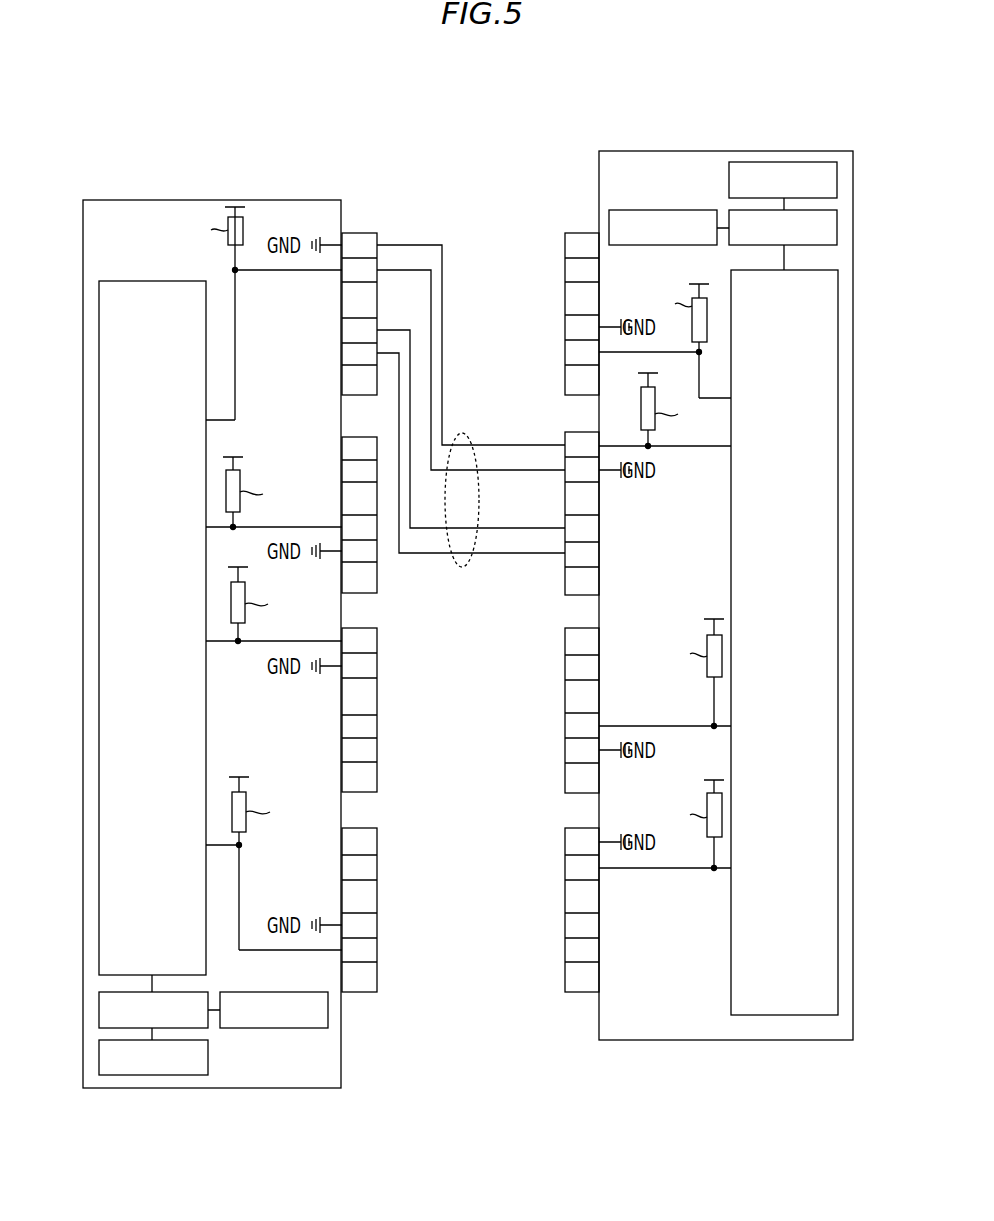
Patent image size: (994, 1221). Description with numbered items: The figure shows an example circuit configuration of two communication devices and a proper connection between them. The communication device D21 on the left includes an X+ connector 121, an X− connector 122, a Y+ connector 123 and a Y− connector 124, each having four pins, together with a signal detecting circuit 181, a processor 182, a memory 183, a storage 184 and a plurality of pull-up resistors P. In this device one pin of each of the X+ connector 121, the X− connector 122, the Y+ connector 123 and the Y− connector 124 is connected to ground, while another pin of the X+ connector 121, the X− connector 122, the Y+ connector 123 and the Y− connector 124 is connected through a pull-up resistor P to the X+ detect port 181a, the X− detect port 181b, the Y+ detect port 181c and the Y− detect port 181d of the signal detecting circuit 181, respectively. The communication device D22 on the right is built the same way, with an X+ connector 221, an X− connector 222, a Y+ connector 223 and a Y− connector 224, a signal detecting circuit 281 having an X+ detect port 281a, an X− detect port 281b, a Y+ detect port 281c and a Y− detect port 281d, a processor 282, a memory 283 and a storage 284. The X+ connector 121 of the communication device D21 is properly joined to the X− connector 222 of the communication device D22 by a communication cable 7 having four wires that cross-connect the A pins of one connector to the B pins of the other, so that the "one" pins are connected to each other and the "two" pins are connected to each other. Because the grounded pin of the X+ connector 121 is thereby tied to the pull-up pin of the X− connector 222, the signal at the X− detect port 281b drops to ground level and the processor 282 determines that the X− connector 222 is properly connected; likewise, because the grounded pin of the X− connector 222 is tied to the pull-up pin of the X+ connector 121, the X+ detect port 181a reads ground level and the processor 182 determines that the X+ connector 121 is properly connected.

The communication device D21 is at (236, 198).
The communication device D22 is at (707, 151).
The communication cable 7 is at (462, 433).
The X+ connector 121 is at (377, 222).
The X− connector 122 is at (377, 593).
The Y+ connector 123 is at (377, 792).
The Y− connector 124 is at (377, 992).
The signal detecting circuit 181 is at (146, 281).
The X+ detect port 181a is at (206, 422).
The X− detect port 181b is at (206, 530).
The Y+ detect port 181c is at (206, 645).
The Y− detect port 181d is at (206, 848).
The processor 182 is at (132, 992).
The memory 183 is at (208, 1058).
The storage 184 is at (302, 1028).
The X+ connector 221 is at (565, 395).
The X− connector 222 is at (565, 595).
The Y+ connector 223 is at (565, 793).
The Y− connector 224 is at (565, 992).
The signal detecting circuit 281 is at (731, 970).
The X+ detect port 281a is at (731, 398).
The X− detect port 281b is at (731, 450).
The Y+ detect port 281c is at (731, 728).
The Y− detect port 281d is at (731, 872).
The processor 282 is at (742, 246).
The memory 283 is at (828, 162).
The storage 284 is at (640, 210).